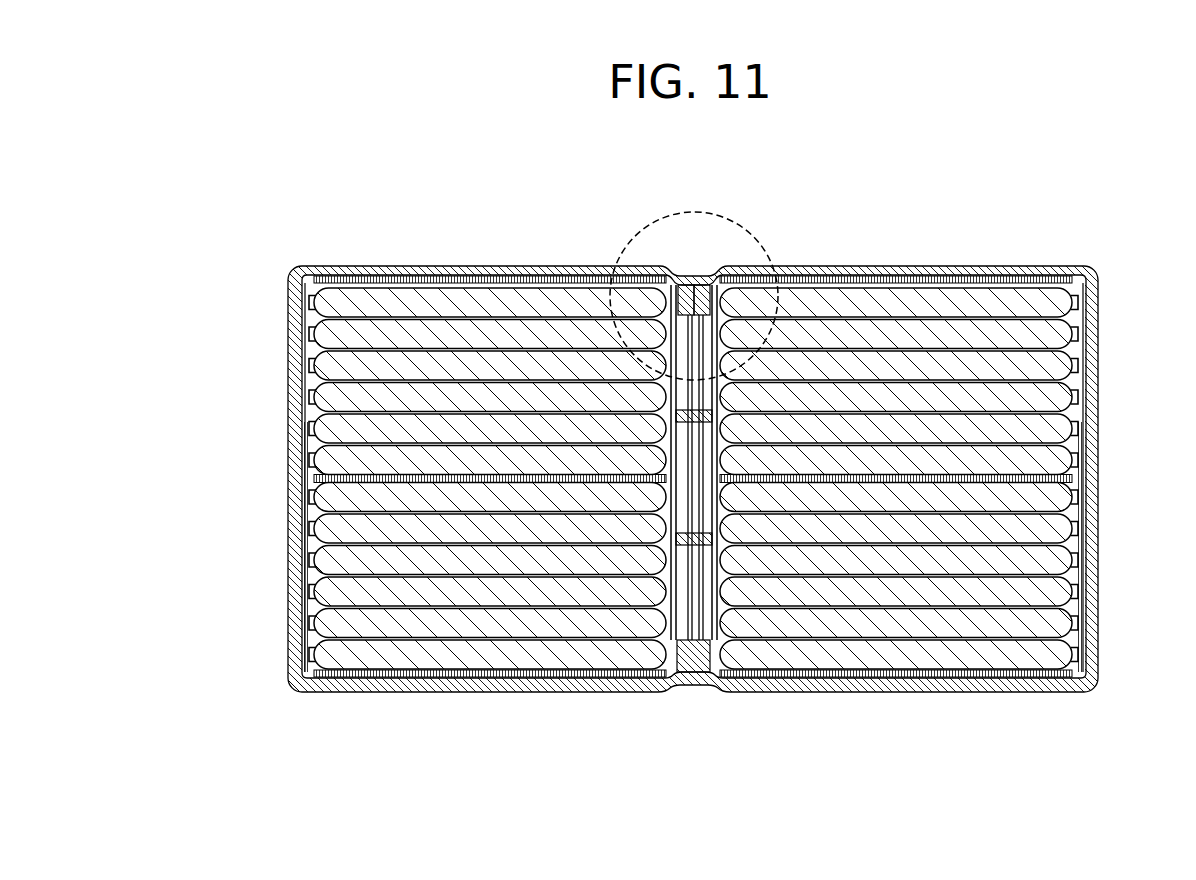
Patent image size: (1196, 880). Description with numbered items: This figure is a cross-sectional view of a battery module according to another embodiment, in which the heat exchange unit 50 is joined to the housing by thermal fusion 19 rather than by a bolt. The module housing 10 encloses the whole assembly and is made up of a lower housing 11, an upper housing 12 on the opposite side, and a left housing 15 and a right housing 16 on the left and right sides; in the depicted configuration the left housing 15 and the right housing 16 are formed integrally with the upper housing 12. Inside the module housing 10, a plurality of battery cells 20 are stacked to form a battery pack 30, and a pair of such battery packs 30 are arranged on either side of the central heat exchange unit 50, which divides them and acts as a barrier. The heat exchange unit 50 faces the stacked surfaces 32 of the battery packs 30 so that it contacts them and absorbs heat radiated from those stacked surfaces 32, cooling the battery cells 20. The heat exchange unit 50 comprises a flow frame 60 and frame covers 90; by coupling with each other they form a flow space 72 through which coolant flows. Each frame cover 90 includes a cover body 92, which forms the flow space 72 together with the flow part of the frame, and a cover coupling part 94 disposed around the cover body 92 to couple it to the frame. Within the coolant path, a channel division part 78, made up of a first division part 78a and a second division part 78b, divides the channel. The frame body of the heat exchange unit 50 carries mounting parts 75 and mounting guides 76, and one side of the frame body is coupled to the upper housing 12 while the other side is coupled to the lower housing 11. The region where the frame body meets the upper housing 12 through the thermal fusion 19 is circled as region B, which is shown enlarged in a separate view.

The module housing 10 is at (1025, 252).
The lower housing 11 is at (897, 693).
The upper housing 12 is at (904, 267).
The left housing 15 is at (290, 333).
The right housing 16 is at (1092, 328).
The thermal fusion 19 is at (612, 283).
The battery cell 20 is at (1093, 487).
The battery pack 30 is at (1036, 358).
The stacked surface 32 is at (720, 420).
The heat exchange unit 50 is at (674, 572).
The flow frame 60 is at (712, 615).
The flow space 72 is at (684, 485).
The mounting part 75 is at (678, 280).
The mounting guide 76 is at (708, 282).
The channel division part 78 is at (435, 439).
The first division part 78a is at (686, 468).
The second division part 78b is at (688, 410).
The frame cover 90 is at (734, 577).
The cover body 92 is at (775, 487).
The cover coupling part 94 is at (742, 282).
The enlarged region B is at (610, 258).